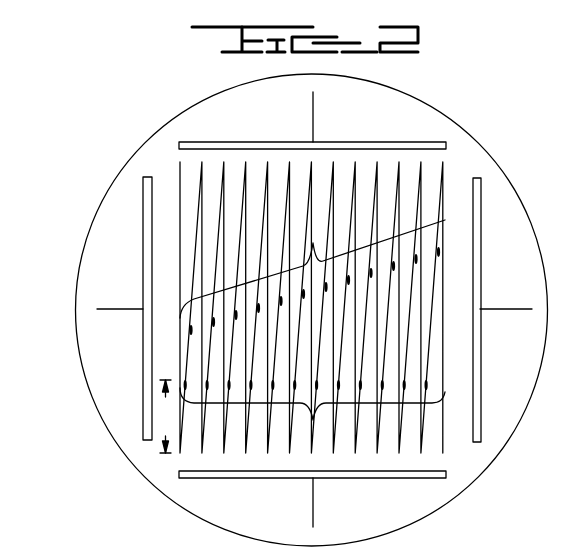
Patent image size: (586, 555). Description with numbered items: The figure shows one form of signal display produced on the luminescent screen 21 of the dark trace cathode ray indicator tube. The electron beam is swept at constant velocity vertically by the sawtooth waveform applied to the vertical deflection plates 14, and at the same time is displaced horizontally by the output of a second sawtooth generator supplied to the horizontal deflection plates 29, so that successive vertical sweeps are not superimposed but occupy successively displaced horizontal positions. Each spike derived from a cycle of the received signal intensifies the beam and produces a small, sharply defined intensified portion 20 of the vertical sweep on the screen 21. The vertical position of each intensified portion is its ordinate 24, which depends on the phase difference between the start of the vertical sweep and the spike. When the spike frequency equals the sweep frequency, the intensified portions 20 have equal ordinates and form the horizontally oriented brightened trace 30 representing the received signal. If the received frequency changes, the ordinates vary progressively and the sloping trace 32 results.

The vertical deflection plates 14 is at (343, 142).
The intensified portion 20 is at (273, 380).
The luminescent screen 21 is at (114, 387).
The ordinate 24 is at (165, 416).
The horizontal deflection plates 29 is at (143, 270).
The brightened trace 30 is at (313, 420).
The sloping trace 32 is at (313, 243).